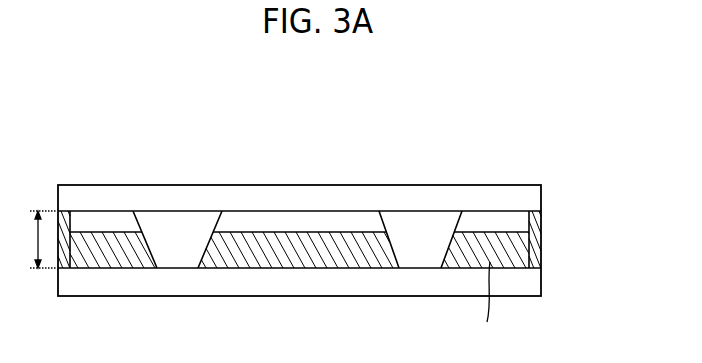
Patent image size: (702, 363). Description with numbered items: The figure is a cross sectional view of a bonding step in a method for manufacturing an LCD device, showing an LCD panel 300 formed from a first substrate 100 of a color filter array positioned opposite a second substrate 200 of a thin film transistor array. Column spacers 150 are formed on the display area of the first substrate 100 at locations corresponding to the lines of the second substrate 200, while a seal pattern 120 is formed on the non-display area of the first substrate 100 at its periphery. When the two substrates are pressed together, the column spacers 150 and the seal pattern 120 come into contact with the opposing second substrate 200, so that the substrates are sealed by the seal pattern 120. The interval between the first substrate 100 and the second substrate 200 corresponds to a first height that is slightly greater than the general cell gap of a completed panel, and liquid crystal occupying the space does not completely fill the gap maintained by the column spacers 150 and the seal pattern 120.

The LCD panel 300 is at (393, 152).
The first substrate 100 is at (541, 197).
The seal pattern 120 is at (541, 240).
The column spacers 150 is at (407, 220).
The second substrate 200 is at (541, 282).